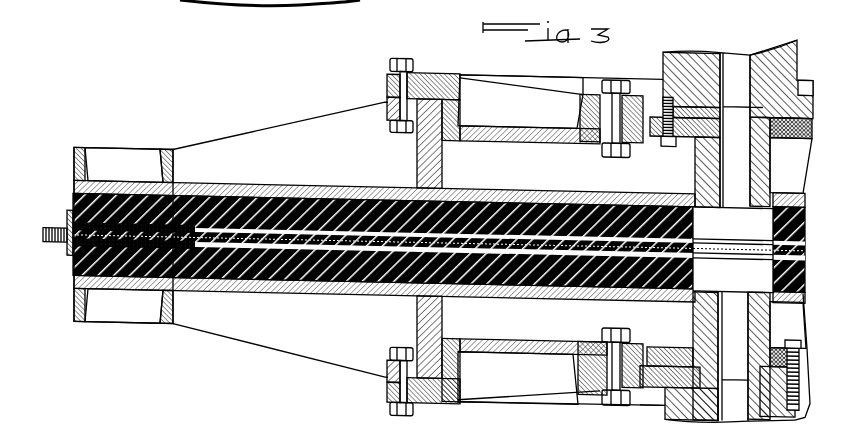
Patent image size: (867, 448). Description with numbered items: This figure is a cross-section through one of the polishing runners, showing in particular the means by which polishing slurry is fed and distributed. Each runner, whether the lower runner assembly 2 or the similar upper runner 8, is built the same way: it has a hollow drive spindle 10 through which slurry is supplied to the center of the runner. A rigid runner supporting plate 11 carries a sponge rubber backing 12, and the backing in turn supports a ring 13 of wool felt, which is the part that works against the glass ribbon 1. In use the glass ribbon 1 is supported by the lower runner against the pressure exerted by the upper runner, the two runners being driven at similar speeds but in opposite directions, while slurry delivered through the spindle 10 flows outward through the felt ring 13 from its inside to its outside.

The glass ribbon 1 is at (723, 231).
The lower runner assembly 2 is at (75, 334).
The upper runner 8 is at (128, 142).
The hollow drive spindle 10 is at (698, 45).
The runner supporting plate 11 is at (328, 183).
The sponge rubber backing 12 is at (300, 200).
The ring of wool felt 13 is at (68, 249).